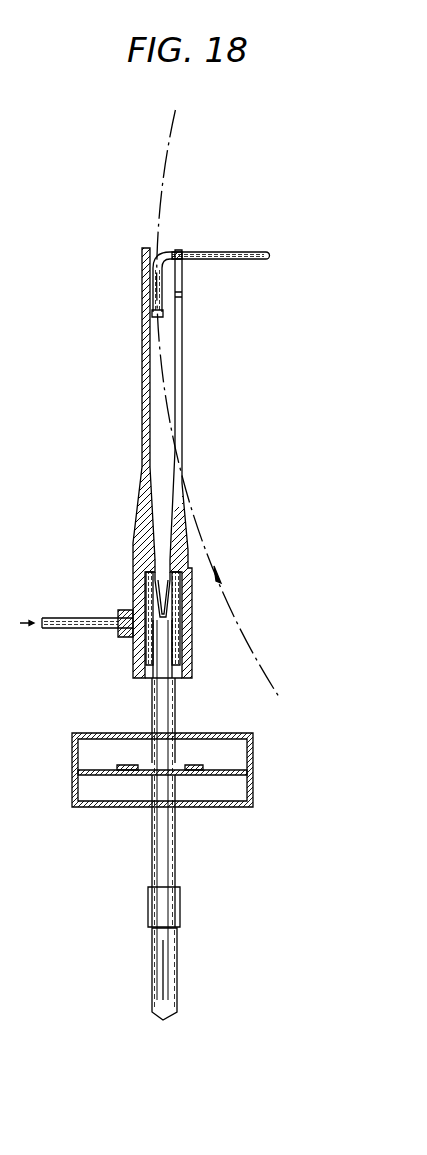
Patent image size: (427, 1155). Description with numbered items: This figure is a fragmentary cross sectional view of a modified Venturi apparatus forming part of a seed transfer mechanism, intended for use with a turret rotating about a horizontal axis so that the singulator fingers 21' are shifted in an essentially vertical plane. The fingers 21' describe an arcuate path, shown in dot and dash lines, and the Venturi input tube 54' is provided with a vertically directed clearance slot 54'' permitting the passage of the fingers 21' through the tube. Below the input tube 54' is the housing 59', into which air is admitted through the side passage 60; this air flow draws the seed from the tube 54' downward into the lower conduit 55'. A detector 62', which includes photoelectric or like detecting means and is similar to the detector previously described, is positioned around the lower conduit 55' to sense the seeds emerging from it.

The singulator fingers 21' is at (211, 265).
The Venturi input tube 54' is at (127, 463).
The clearance slot 54'' is at (206, 464).
The housing 59' is at (189, 625).
The passage 60 is at (88, 615).
The lower conduit 55' is at (144, 820).
The detector 62' is at (189, 770).